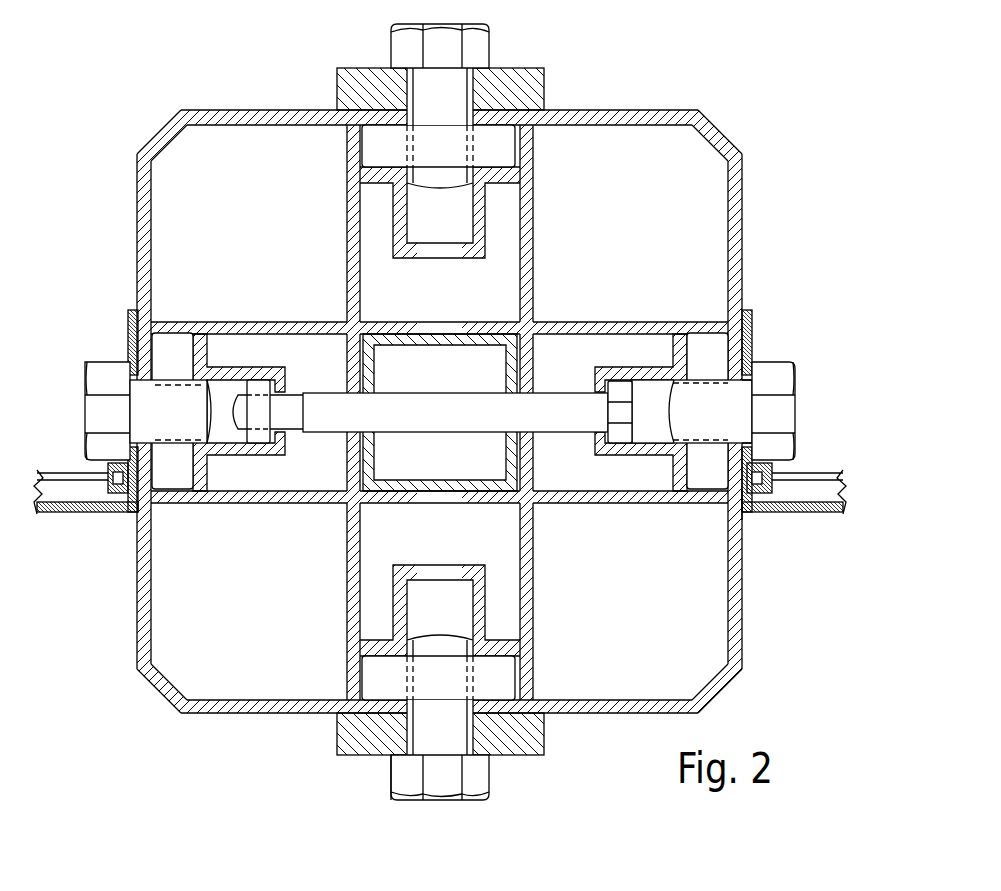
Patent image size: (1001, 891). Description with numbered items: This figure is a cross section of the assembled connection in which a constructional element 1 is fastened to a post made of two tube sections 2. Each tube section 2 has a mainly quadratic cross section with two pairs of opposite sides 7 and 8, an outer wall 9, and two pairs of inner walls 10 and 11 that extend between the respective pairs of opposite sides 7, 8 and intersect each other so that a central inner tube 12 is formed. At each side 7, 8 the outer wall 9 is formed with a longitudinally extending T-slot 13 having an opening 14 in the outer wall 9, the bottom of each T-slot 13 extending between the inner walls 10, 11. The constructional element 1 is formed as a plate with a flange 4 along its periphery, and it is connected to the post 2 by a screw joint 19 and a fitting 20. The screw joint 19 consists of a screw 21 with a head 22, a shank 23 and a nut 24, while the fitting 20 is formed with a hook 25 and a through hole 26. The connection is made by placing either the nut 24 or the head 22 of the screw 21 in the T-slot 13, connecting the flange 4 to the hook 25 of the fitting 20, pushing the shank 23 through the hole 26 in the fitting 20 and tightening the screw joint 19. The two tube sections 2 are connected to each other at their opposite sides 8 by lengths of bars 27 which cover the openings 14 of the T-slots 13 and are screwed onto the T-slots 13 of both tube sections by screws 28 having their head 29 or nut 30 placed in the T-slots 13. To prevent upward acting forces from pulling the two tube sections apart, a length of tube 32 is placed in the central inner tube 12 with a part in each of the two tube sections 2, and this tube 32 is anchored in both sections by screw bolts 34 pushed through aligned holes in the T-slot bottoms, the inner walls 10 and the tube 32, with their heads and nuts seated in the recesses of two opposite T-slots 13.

The constructional element 1 is at (803, 507).
The tube section 2 is at (656, 92).
The flange 4 is at (737, 503).
The opposite sides 7 is at (138, 614).
The opposite sides 8 is at (578, 115).
The outer wall 9 is at (628, 698).
The inner walls 10 is at (347, 585).
The inner walls 11 is at (582, 322).
The central inner tube 12 is at (347, 352).
The T-slot 13 is at (358, 686).
The opening 14 is at (480, 707).
The screw joint 19 is at (777, 366).
The fitting 20 is at (748, 308).
The screw 21 is at (795, 418).
The head 22 is at (795, 383).
The shank 23 is at (745, 423).
The nut 24 is at (703, 333).
The hook 25 is at (770, 470).
The through hole 26 is at (747, 378).
The bar 27 is at (525, 755).
The screws 28 is at (443, 797).
The head 29 is at (395, 797).
The nut 30 is at (365, 666).
The tube 32 is at (382, 468).
The screw bolts 34 is at (458, 422).